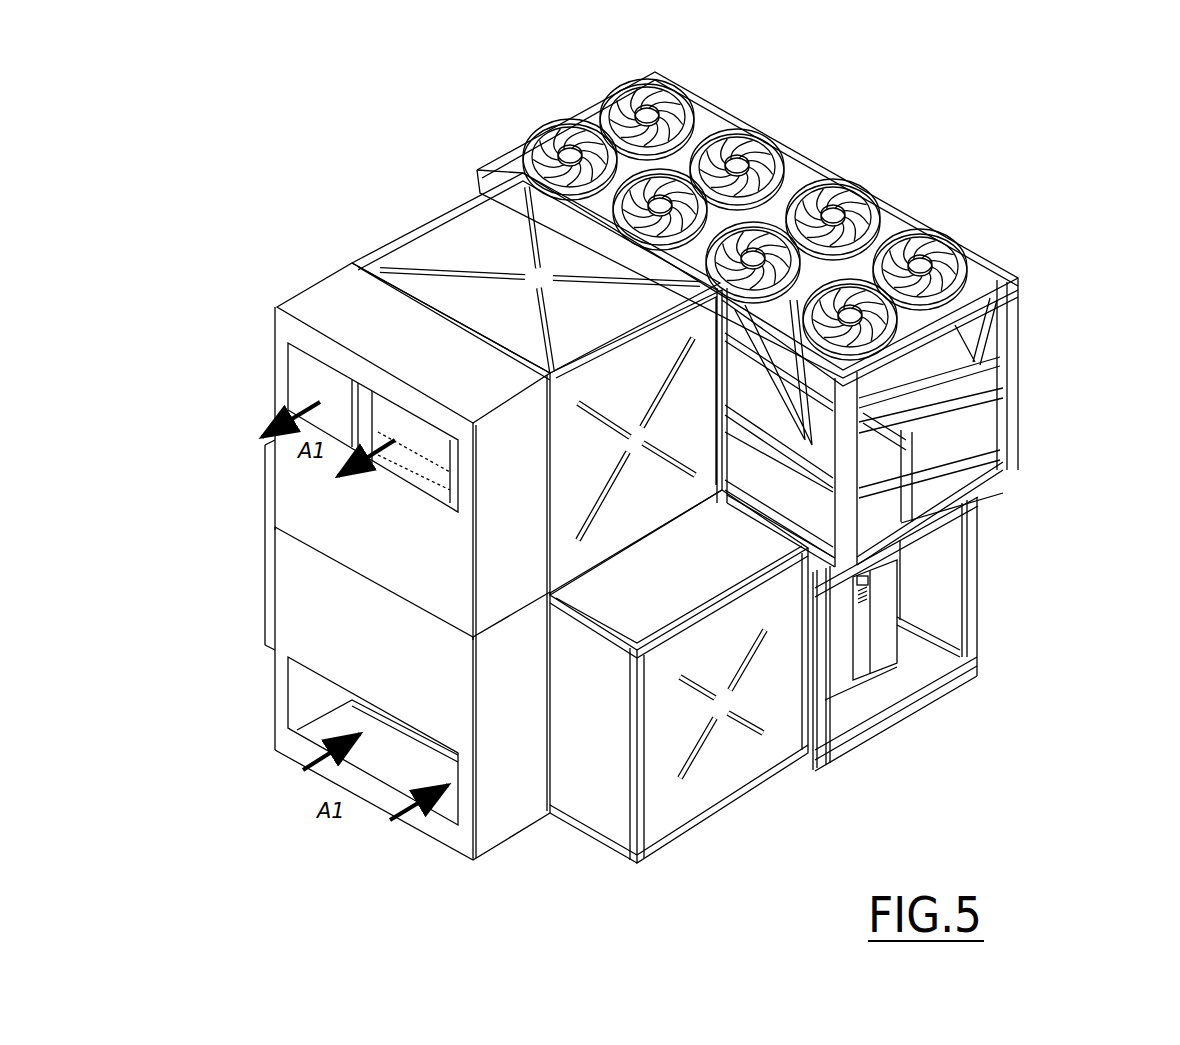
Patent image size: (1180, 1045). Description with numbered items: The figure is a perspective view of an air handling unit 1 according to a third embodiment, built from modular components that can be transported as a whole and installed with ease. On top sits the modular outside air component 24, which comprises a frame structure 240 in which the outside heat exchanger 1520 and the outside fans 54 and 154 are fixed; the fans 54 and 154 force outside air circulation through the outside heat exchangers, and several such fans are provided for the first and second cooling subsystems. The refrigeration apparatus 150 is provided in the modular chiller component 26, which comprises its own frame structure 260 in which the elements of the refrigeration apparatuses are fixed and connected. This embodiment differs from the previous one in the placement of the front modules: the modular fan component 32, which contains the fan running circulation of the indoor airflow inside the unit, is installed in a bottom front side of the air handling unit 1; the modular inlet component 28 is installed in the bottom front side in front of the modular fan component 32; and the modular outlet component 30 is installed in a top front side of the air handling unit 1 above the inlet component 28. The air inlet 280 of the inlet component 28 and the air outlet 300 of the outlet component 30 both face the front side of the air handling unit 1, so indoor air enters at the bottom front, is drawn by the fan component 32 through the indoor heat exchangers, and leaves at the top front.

The air handling unit 1 is at (132, 172).
The modular outside air component 24 is at (789, 165).
The modular chiller component 26 is at (920, 695).
The modular inlet component 28 is at (508, 797).
The modular outlet component 30 is at (350, 300).
The modular fan component 32 is at (730, 765).
The fans 54 is at (737, 158).
The refrigeration apparatus 150 is at (883, 613).
The fans 154 is at (918, 265).
The frame structure 240 is at (1012, 432).
The frame structure 260 is at (975, 580).
The air inlet 280 is at (310, 694).
The air outlet 300 is at (306, 371).
The outside heat exchanger 1520 is at (1007, 402).